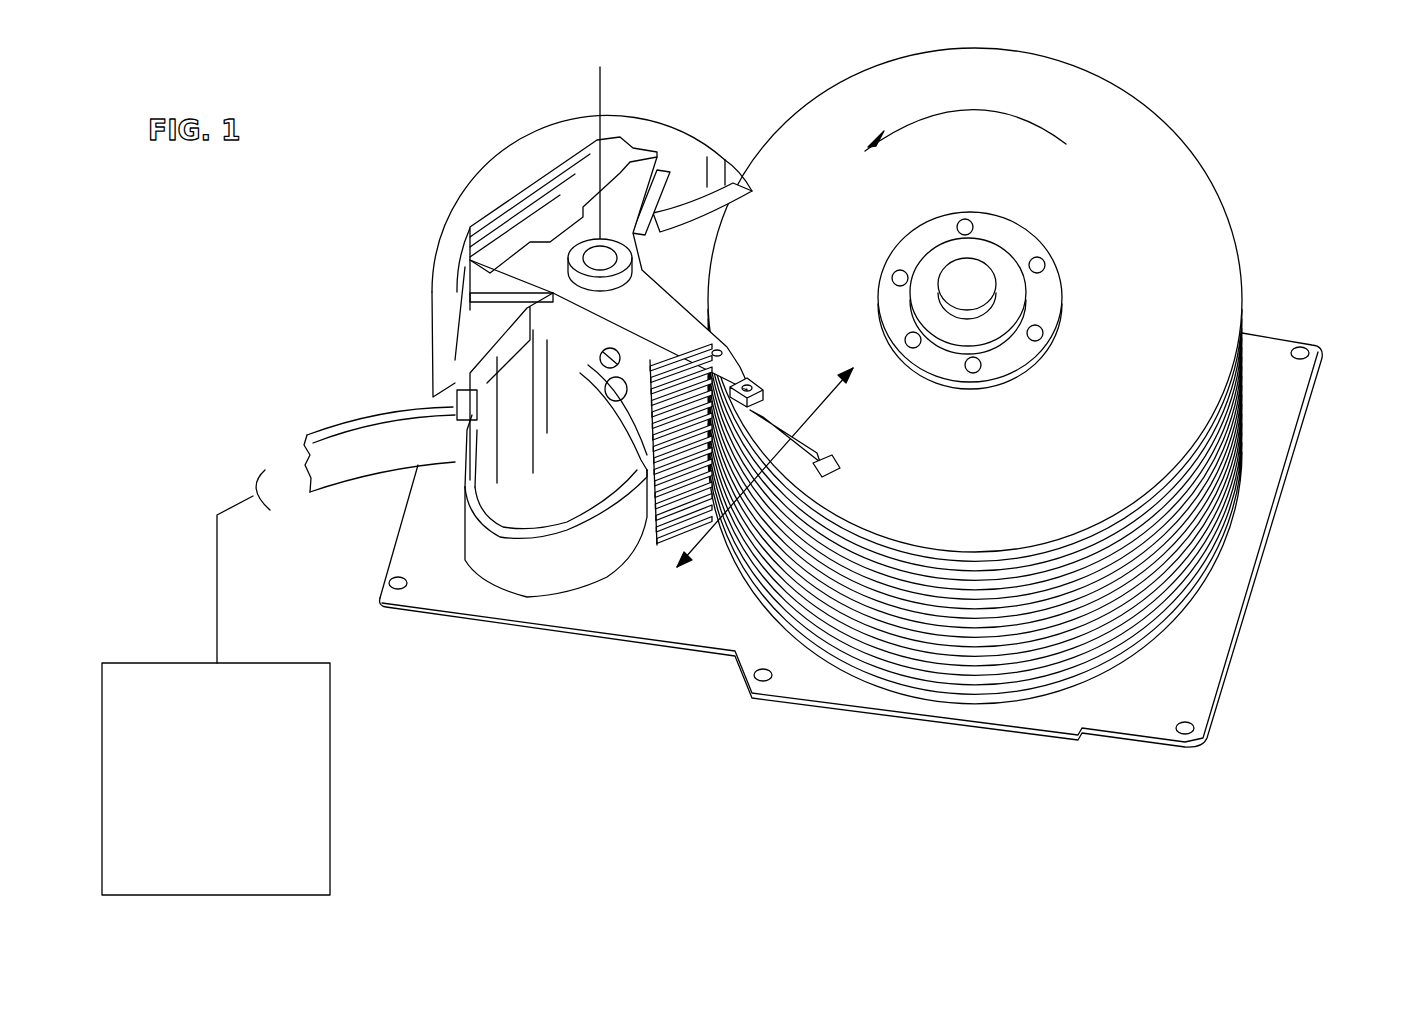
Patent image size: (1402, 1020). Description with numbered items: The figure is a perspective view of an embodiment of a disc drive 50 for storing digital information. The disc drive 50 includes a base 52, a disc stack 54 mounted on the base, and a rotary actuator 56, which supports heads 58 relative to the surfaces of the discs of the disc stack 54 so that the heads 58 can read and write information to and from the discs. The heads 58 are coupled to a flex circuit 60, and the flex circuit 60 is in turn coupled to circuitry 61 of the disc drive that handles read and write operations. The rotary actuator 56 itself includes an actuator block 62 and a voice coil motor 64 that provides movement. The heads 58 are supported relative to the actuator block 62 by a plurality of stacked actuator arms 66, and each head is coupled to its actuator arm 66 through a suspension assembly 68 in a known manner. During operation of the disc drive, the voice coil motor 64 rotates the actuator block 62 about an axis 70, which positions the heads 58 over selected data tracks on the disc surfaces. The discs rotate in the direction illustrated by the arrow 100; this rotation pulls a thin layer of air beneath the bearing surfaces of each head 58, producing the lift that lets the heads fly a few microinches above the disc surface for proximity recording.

The disc drive 50 is at (1258, 187).
The base 52 is at (1277, 418).
The disc stack 54 is at (1110, 197).
The rotary actuator 56 is at (643, 268).
The heads 58 is at (838, 473).
The flex circuit 60 is at (551, 570).
The circuitry 61 is at (333, 749).
The actuator block 62 is at (670, 293).
The voice coil motor 64 is at (478, 175).
The actuator arms 66 is at (720, 337).
The suspension assemblies 68 is at (765, 402).
The axis 70 is at (600, 138).
The arrow 100 is at (948, 108).